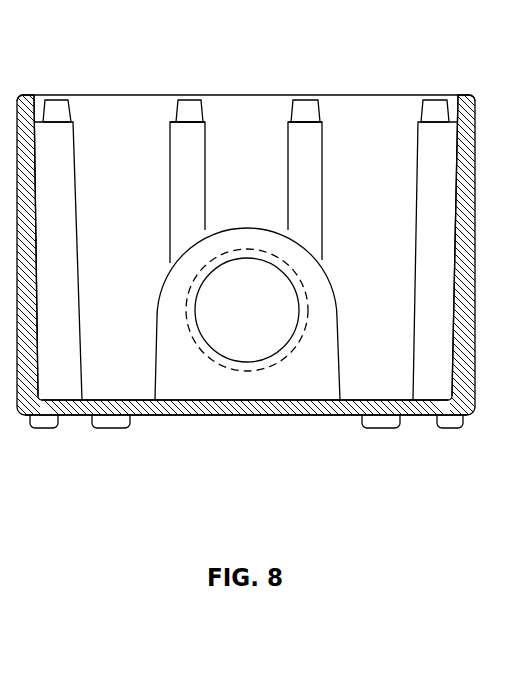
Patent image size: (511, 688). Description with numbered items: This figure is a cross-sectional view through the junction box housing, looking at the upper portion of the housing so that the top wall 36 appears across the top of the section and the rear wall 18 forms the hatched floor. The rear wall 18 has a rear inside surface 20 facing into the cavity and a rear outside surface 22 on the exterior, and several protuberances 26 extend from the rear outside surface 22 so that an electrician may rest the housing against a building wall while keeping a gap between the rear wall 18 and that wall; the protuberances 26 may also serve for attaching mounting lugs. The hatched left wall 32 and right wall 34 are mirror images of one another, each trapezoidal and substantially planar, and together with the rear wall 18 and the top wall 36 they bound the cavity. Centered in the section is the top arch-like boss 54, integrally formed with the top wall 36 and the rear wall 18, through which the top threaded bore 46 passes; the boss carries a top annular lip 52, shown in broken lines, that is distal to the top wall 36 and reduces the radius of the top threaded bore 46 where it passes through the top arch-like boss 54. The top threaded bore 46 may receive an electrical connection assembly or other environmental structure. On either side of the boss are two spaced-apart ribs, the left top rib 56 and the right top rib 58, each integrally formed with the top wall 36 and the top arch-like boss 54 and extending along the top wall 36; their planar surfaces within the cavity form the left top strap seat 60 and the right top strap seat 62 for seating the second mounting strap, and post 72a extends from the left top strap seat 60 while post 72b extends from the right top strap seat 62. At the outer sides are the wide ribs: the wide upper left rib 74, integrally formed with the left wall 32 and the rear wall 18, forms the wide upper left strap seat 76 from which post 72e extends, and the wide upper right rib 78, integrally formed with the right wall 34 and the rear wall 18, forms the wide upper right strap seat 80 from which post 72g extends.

The rear wall 18 is at (287, 408).
The rear inside surface 20 is at (97, 400).
The rear outside surface 22 is at (217, 417).
The protuberances 26 is at (44, 428).
The left wall 32 is at (25, 230).
The right wall 34 is at (460, 242).
The top wall 36 is at (246, 133).
The top threaded bore 46 is at (273, 297).
The top annular lip 52 is at (233, 252).
The top arch-like boss 54 is at (333, 380).
The left top rib 56 is at (190, 167).
The right top rib 58 is at (308, 155).
The left top strap seat 60 is at (169, 120).
The right top strap seat 62 is at (287, 119).
The post 72a is at (192, 107).
The post 72b is at (306, 107).
The post 72e is at (55, 105).
The post 72g is at (437, 105).
The wide upper left rib 74 is at (67, 290).
The wide upper left strap seat 76 is at (42, 112).
The wide upper right rib 78 is at (423, 293).
The wide upper right strap seat 80 is at (457, 99).